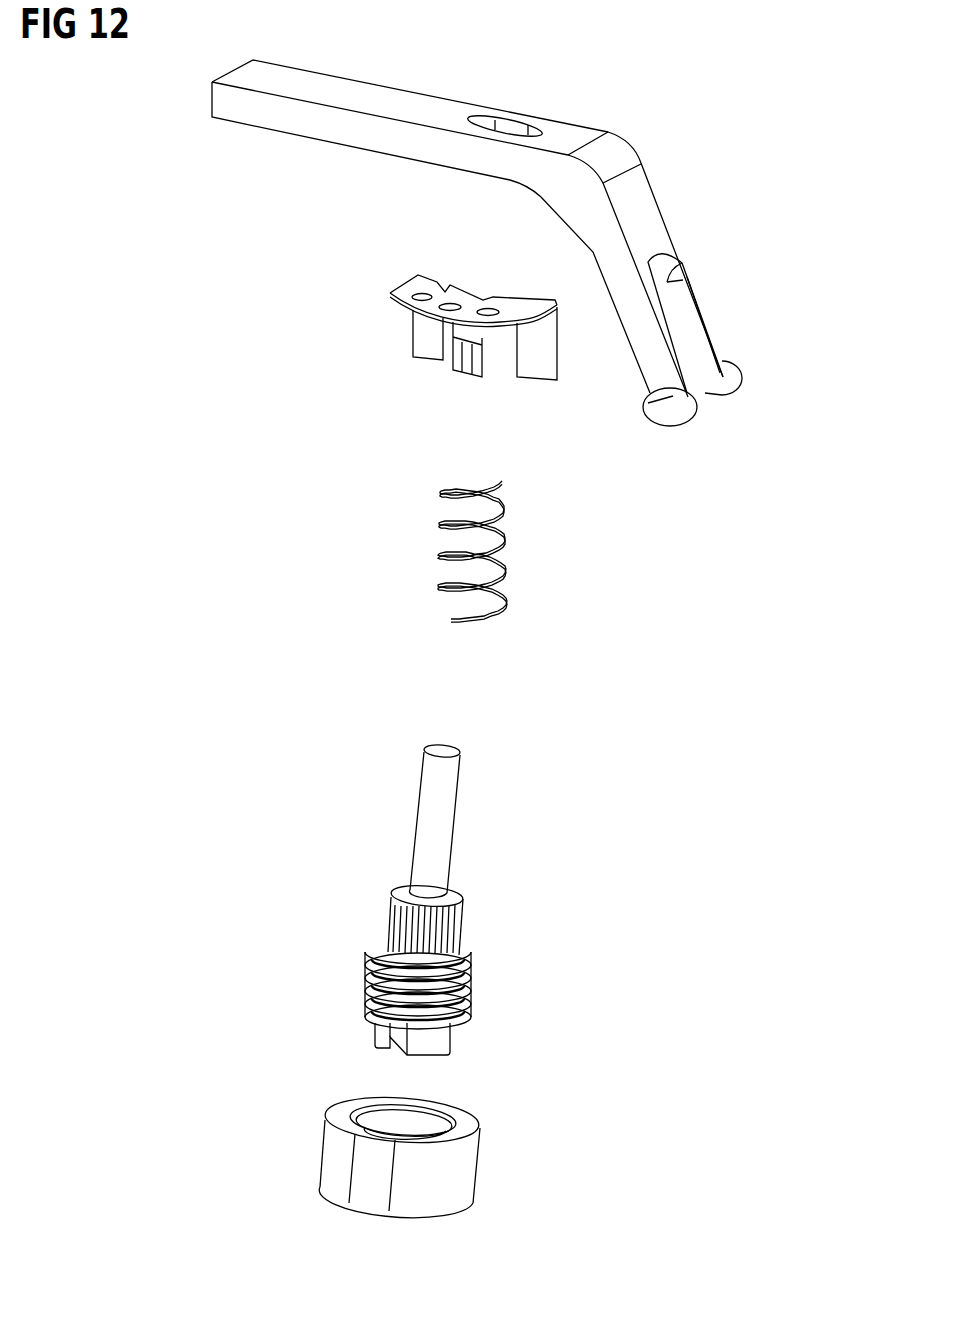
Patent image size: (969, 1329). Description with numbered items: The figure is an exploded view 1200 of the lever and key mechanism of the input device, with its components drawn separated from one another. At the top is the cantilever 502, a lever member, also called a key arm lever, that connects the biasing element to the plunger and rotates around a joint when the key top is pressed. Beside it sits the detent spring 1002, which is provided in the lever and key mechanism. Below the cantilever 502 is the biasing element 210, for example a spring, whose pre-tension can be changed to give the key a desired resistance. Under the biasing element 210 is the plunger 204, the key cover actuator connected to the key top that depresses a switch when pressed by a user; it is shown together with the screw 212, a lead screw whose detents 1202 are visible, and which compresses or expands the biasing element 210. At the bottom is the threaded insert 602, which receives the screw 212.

The exploded view 1200 is at (783, 80).
The cantilever 502 is at (607, 150).
The detent spring 1002 is at (420, 332).
The biasing element 210 is at (483, 555).
The plunger 204 is at (440, 795).
The detents 1202 is at (453, 920).
The screw 212 is at (467, 1003).
The threaded insert 602 is at (465, 1167).